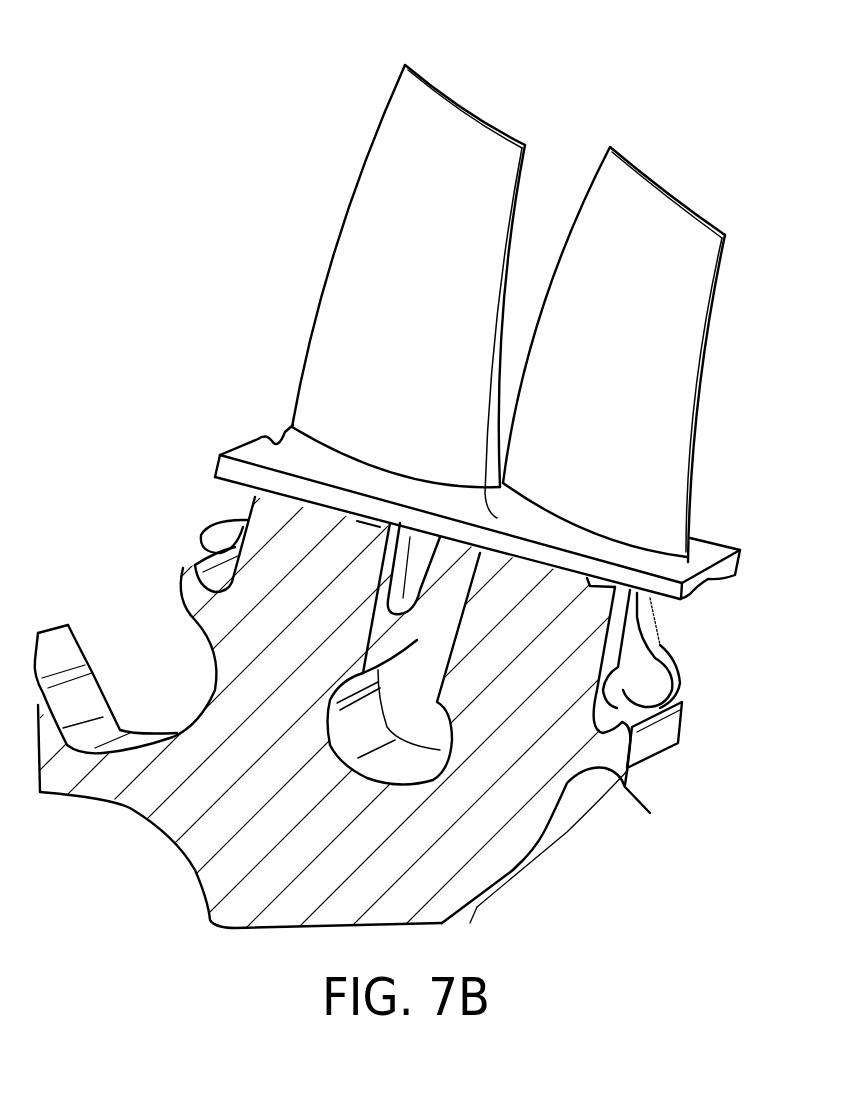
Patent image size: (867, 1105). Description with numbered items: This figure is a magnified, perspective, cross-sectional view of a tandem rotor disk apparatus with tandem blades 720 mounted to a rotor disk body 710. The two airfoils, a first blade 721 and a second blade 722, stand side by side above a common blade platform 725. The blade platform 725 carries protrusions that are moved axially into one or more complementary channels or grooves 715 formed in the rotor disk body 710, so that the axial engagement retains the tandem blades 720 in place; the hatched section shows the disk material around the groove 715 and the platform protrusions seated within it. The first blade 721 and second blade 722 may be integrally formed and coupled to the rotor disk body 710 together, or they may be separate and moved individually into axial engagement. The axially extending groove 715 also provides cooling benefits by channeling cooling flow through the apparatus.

The rotor disk body 710 is at (480, 868).
The channel/groove 715 is at (403, 592).
The tandem blades 720 is at (250, 135).
The first blade 721 is at (440, 309).
The second blade 722 is at (632, 379).
The blade platform 725 is at (213, 540).